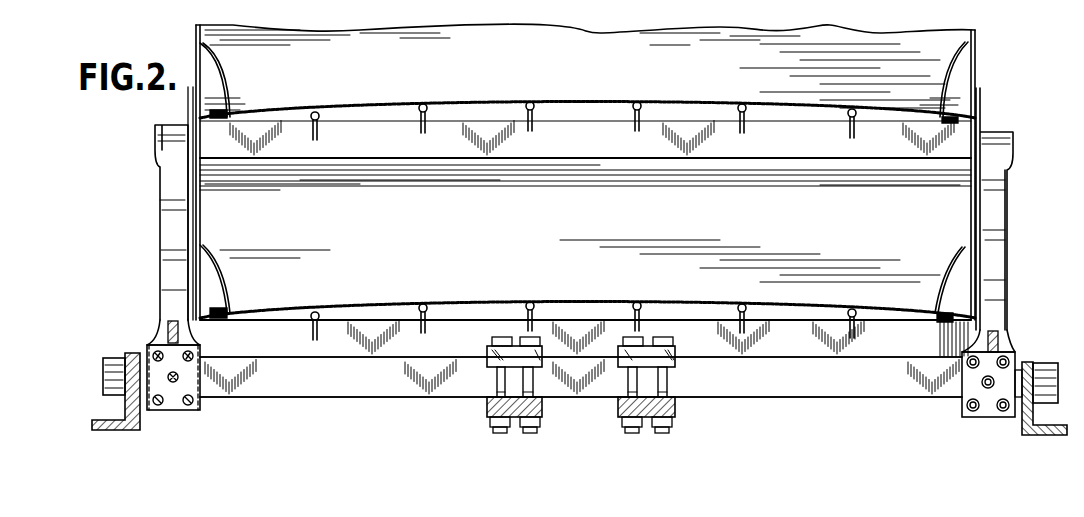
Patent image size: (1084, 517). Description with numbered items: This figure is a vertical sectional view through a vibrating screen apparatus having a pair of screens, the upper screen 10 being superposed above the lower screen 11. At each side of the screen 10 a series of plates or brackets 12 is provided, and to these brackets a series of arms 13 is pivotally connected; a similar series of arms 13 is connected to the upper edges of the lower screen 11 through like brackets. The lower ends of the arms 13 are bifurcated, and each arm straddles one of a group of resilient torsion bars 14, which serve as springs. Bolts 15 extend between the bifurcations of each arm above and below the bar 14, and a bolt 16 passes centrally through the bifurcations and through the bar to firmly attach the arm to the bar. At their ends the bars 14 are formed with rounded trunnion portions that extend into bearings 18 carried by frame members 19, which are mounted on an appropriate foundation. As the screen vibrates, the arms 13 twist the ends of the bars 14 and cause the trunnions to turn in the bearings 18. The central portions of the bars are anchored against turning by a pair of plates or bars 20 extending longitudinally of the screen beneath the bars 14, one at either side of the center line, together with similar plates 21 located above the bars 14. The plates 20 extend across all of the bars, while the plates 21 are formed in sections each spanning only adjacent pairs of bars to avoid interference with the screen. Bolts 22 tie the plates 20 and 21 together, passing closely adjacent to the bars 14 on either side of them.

The screen 10 is at (957, 38).
The screen 11 is at (950, 232).
The plates or brackets 12 is at (195, 110).
The arms 13 is at (172, 222).
The resilient torsion bars 14 is at (318, 387).
The bolts 15 is at (190, 406).
The bolt 16 is at (178, 377).
The bearings 18 is at (114, 362).
The frame members 19 is at (140, 419).
The plates or bars 20 is at (618, 408).
The plates 21 is at (490, 350).
The bolts 22 is at (528, 380).